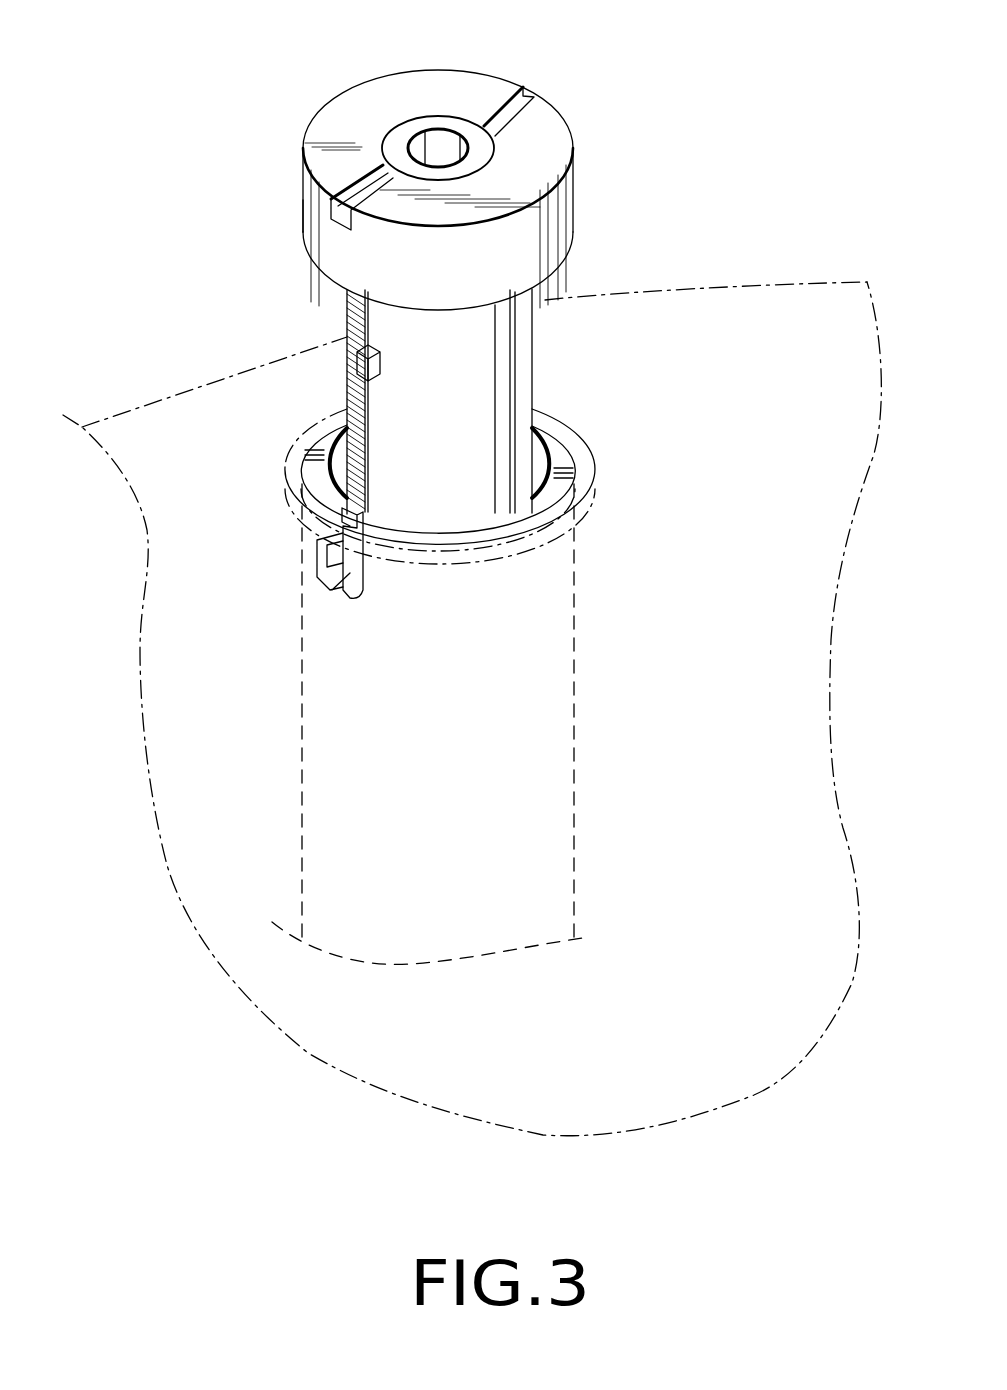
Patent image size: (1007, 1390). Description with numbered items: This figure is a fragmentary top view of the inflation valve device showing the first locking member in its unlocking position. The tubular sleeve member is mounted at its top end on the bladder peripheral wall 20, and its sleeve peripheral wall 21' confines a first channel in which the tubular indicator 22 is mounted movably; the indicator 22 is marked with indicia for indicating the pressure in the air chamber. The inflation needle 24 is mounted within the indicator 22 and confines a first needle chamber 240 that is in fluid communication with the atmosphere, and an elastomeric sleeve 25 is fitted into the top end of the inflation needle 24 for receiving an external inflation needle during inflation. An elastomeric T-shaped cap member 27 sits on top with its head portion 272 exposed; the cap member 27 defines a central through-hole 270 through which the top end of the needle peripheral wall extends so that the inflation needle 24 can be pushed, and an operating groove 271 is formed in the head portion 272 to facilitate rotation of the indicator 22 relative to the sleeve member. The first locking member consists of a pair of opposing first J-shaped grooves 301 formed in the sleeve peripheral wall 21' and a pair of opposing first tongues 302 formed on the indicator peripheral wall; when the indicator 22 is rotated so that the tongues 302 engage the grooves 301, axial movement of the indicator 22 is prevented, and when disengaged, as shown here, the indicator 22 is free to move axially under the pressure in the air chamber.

The bladder peripheral wall 20 is at (815, 330).
The sleeve peripheral wall 21' is at (521, 375).
The tubular indicator 22 is at (517, 342).
The inflation needle 24 is at (437, 120).
The first needle chamber 240 is at (423, 140).
The elastomeric sleeve 25 is at (476, 142).
The T-shaped cap member 27 is at (576, 190).
The central through-hole 270 is at (383, 137).
The operating groove 271 is at (335, 190).
The head portion 272 is at (303, 233).
The first J-shaped grooves 301 is at (347, 587).
The first tongues 302 is at (357, 365).